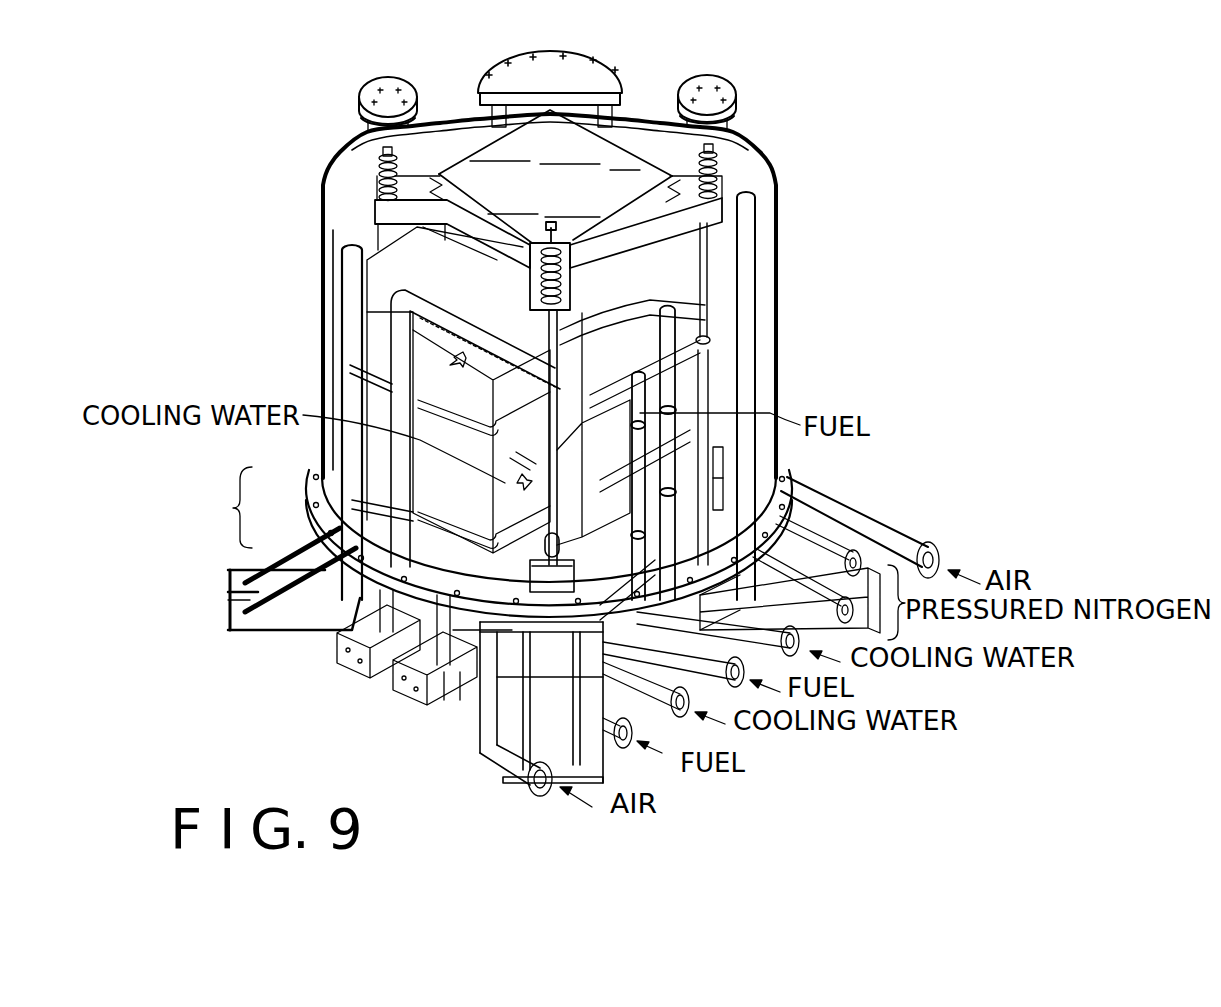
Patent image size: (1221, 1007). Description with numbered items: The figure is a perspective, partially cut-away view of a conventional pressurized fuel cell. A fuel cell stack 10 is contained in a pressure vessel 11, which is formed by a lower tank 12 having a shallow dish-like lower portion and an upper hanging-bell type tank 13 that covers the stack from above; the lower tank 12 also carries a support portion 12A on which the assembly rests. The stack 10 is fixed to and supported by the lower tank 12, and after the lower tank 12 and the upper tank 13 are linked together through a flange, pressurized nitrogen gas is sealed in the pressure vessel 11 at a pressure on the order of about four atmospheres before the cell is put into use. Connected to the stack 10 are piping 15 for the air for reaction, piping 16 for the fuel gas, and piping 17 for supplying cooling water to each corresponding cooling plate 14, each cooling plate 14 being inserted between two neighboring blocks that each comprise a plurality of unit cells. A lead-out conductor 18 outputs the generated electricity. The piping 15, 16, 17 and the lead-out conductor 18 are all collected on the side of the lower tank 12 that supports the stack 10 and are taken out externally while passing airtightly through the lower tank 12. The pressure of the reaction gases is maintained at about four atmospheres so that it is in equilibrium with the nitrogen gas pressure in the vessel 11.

The fuel cell stack 10 is at (633, 153).
The pressure vessel 11 is at (227, 507).
The lower tank 12 is at (318, 553).
The support beam 12A is at (325, 598).
The upper hanging-bell type tank 13 is at (330, 462).
The cooling plate 14 is at (400, 332).
The piping for the air for reaction 15 is at (742, 240).
The piping for a fuel gas 16 is at (705, 349).
The piping for supplying cooling water 17 is at (667, 390).
The lead-out conductor 18 is at (390, 297).